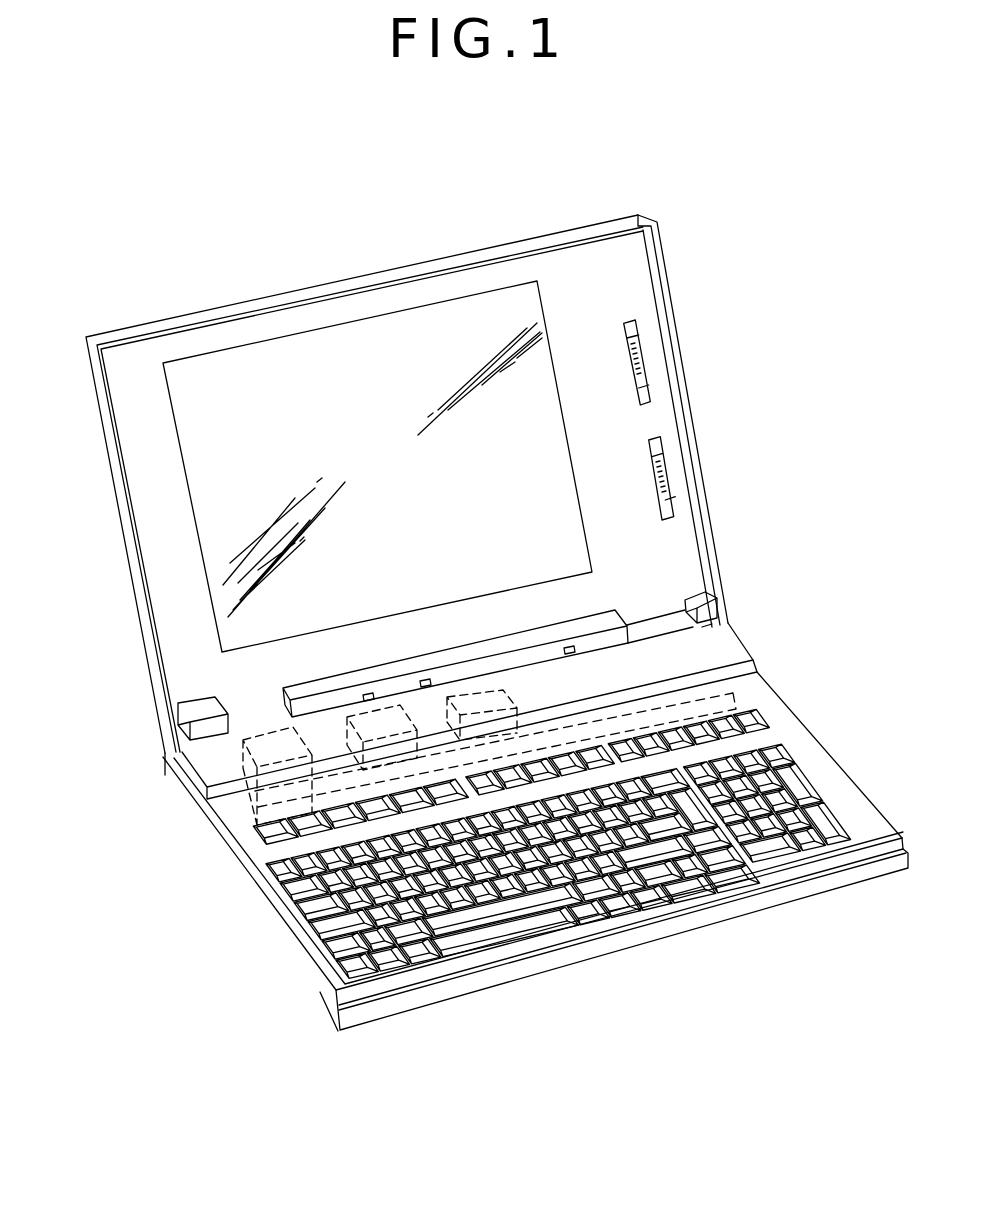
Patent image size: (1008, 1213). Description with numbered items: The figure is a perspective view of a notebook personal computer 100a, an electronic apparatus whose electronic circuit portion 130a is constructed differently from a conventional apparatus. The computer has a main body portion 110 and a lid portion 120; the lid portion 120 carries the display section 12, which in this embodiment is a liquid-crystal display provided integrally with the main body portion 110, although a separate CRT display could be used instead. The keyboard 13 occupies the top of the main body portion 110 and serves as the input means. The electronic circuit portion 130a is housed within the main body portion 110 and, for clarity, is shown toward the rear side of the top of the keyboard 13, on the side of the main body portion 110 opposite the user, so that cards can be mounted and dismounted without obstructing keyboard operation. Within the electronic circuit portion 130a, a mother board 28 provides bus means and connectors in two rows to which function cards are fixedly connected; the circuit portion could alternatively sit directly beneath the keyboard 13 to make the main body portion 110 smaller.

The lid portion 120 is at (109, 465).
The display section 12 is at (206, 540).
The electronic circuit portion 130a is at (733, 689).
The notebook personal computer 100a is at (846, 780).
The mother board 28 is at (237, 804).
The keyboard 13 is at (345, 882).
The main body portion 110 is at (275, 930).